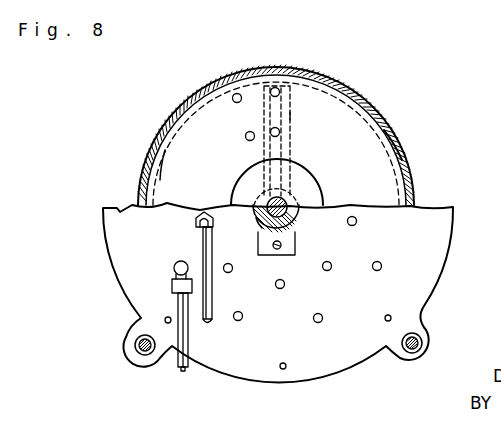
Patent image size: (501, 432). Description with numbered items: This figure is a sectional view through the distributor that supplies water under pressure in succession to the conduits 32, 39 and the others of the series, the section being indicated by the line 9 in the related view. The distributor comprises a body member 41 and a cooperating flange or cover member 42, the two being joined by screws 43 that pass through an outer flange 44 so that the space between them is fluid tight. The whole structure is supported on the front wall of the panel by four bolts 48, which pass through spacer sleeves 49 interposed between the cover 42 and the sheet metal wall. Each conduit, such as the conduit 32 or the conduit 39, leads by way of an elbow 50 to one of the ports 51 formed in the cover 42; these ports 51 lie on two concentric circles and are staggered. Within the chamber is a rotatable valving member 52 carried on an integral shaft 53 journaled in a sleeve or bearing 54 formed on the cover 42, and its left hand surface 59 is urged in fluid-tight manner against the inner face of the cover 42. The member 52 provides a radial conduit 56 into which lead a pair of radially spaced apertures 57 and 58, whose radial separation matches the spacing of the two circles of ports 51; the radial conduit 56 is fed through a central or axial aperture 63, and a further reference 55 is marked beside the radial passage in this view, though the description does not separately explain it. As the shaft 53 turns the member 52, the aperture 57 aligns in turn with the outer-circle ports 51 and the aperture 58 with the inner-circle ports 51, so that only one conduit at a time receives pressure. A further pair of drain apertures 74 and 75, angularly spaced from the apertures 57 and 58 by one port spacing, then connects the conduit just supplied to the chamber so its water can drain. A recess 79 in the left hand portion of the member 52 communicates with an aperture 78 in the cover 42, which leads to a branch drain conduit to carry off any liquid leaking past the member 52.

The rotary disc assembly 9 is at (200, 61).
The conduit 32 is at (184, 372).
The conduit 39 is at (214, 308).
The body member 41 is at (393, 128).
The cover member 42 is at (443, 251).
The screws 43 is at (287, 366).
The outer flange 44 is at (290, 88).
The bolts 48 is at (145, 355).
The spacer sleeves 49 is at (126, 349).
The elbow 50 is at (174, 266).
The ports 51 is at (352, 226).
The rotatable valving member 52 is at (338, 108).
The shaft 53 is at (300, 223).
The sleeve or bearing 54 is at (260, 222).
The groove 55 is at (290, 116).
The radial conduit 56 is at (266, 101).
The aperture 57 is at (276, 88).
The aperture 58 is at (280, 132).
The left hand surface 59 is at (177, 163).
The central or axial aperture 63 is at (288, 205).
The drain aperture 74 is at (233, 101).
The drain aperture 75 is at (245, 136).
The aperture 78 is at (277, 256).
The recess 79 is at (240, 189).